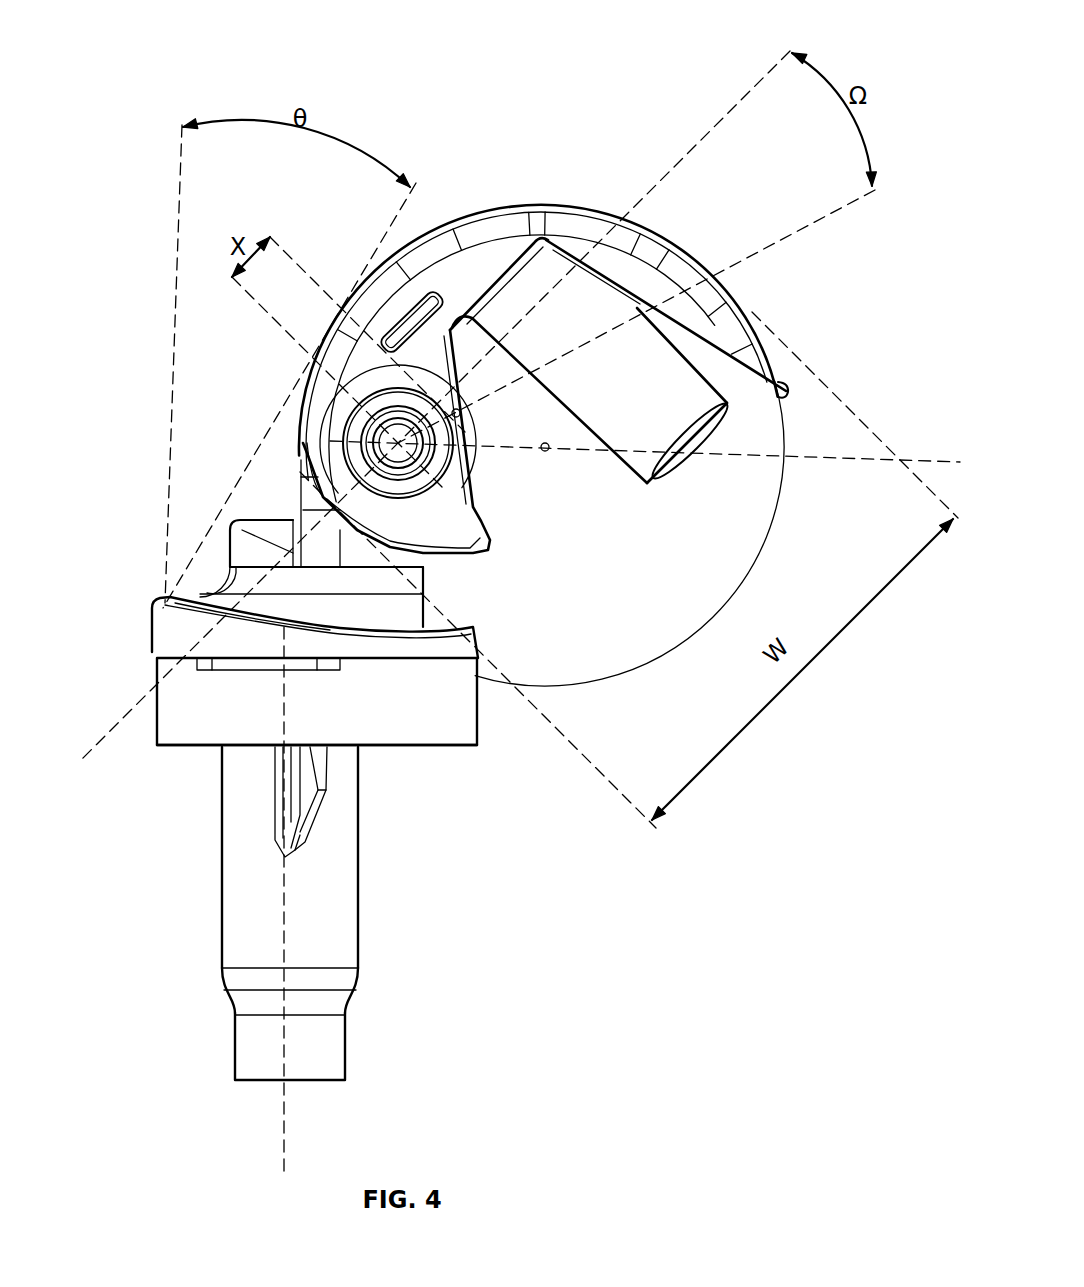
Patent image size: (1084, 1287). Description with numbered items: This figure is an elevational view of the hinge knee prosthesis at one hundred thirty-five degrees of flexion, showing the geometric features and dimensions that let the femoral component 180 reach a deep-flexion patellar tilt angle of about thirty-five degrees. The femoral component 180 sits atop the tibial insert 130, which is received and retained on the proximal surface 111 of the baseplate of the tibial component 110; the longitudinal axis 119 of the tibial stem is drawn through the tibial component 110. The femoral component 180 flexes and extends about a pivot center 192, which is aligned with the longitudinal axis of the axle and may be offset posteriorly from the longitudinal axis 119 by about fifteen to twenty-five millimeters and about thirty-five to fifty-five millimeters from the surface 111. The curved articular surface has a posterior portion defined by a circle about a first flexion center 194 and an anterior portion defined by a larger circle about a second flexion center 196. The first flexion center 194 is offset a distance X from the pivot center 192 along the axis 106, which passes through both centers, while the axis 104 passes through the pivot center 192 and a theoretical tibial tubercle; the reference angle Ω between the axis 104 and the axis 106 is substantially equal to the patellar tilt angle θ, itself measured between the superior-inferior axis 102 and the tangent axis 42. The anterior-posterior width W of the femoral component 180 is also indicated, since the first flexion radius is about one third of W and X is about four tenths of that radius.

The tangent axis 42 is at (392, 220).
The superior-inferior axis 102 is at (178, 298).
The axis 104 is at (730, 108).
The axis 106 is at (806, 228).
The tibial component 110 is at (392, 965).
The proximal surface 111 is at (424, 750).
The longitudinal axis 119 is at (283, 1133).
The tibial insert 130 is at (136, 626).
The femoral component 180 is at (578, 140).
The pivot center 192 is at (394, 442).
The first flexion center 194 is at (459, 418).
The second flexion center 196 is at (547, 451).